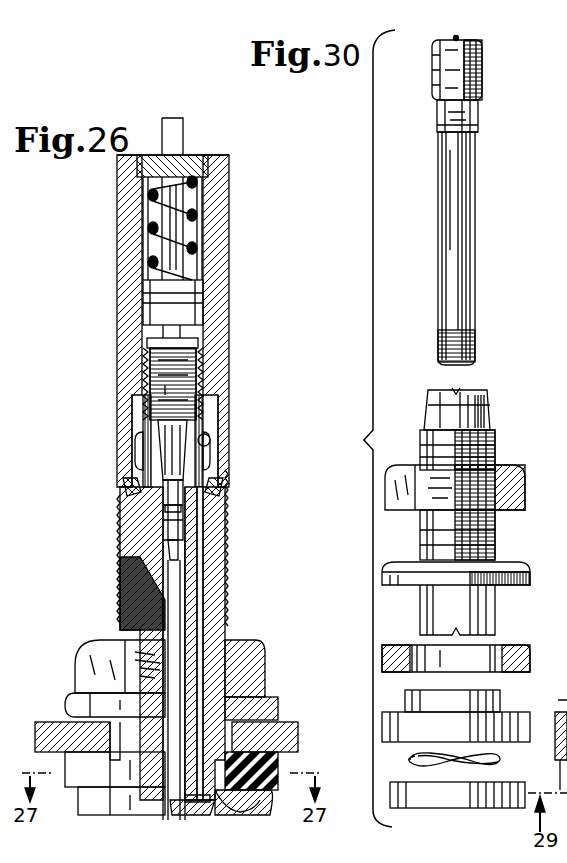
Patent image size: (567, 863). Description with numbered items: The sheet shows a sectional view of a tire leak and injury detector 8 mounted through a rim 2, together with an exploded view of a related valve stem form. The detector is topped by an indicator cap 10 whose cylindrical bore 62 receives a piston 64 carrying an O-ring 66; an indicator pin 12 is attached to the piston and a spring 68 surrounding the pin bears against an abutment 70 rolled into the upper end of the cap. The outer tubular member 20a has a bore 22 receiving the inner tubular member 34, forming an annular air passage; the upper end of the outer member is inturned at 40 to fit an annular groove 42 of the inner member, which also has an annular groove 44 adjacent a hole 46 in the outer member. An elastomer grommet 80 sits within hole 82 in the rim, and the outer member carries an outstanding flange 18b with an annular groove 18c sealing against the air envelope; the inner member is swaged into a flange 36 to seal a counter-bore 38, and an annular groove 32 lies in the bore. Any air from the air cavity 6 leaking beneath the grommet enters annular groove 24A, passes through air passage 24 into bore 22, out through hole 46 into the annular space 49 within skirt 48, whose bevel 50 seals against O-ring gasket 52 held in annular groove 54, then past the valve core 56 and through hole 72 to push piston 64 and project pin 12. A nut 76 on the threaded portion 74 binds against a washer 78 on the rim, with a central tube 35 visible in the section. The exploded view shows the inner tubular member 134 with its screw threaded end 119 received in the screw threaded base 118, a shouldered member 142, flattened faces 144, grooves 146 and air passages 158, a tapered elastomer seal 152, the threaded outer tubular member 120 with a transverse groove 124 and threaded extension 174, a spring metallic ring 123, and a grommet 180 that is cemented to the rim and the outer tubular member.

In FIG. 26, the rim 2 is at (302, 728).
In FIG. 30, the rim 2 is at (523, 652).
In FIG. 26, the air cavity 6 is at (67, 717).
In FIG. 26, the tire leak and injury detector 8 is at (117, 573).
In FIG. 26, the indicator cap 10 is at (267, 267).
In FIG. 26, the indicator pin 12 is at (177, 138).
In FIG. 26, the outstanding flange 18b is at (273, 807).
In FIG. 26, the annular groove 18c is at (250, 823).
In FIG. 26, the outer tubular member 20a is at (213, 608).
In FIG. 26, the bore 22 is at (220, 618).
In FIG. 26, the air passage 24 is at (277, 753).
In FIG. 26, the annular groove 24A is at (267, 710).
In FIG. 26, the annular groove 32 is at (167, 820).
In FIG. 26, the inner tubular member 34 is at (190, 535).
In FIG. 26, the central tube 35 is at (177, 577).
In FIG. 26, the flange 36 is at (195, 818).
In FIG. 26, the counter-bore 38 is at (230, 818).
In FIG. 26, the inturned upper end 40 is at (205, 437).
In FIG. 26, the annular groove 42 is at (208, 442).
In FIG. 26, the annular groove 44 is at (150, 460).
In FIG. 26, the hole 46 is at (227, 465).
In FIG. 26, the skirt 48 is at (220, 410).
In FIG. 26, the annular space 49 is at (203, 420).
In FIG. 26, the bevel 50 is at (125, 493).
In FIG. 26, the O-ring gasket 52 is at (230, 487).
In FIG. 26, the annular groove 54 is at (120, 503).
In FIG. 26, the valve core 56 is at (157, 423).
In FIG. 30, the valve core 56 is at (460, 34).
In FIG. 26, the cylindrical bore 62 is at (197, 232).
In FIG. 26, the piston 64 is at (200, 328).
In FIG. 26, the O-ring 66 is at (197, 300).
In FIG. 26, the spring 68 is at (193, 248).
In FIG. 26, the abutment 70 is at (203, 170).
In FIG. 26, the hole 72 is at (173, 330).
In FIG. 26, the threaded portion 74 is at (227, 590).
In FIG. 26, the nut 76 is at (253, 660).
In FIG. 30, the nut 76 is at (523, 477).
In FIG. 26, the washer 78 is at (273, 700).
In FIG. 30, the washer 78 is at (520, 572).
In FIG. 26, the elastomer grommet 80 is at (80, 785).
In FIG. 26, the hole 82 is at (115, 740).
In FIG. 30, the hole 82 is at (415, 650).
In FIG. 30, the screw threaded base 118 is at (427, 800).
In FIG. 30, the screw threaded end 119 is at (458, 342).
In FIG. 30, the outer tubular member 120 is at (493, 447).
In FIG. 30, the spring metallic ring 123 is at (500, 766).
In FIG. 30, the transverse groove 124 is at (457, 637).
In FIG. 30, the inner tubular member 134 is at (467, 217).
In FIG. 30, the shouldered member 142 is at (477, 125).
In FIG. 30, the flattened faces 144 is at (463, 113).
In FIG. 30, the grooves 146 is at (457, 391).
In FIG. 30, the tapered elastomer seal 152 is at (487, 413).
In FIG. 30, the air passages 158 is at (460, 63).
In FIG. 30, the threaded extension 174 is at (493, 555).
In FIG. 30, the grommet 180 is at (500, 697).